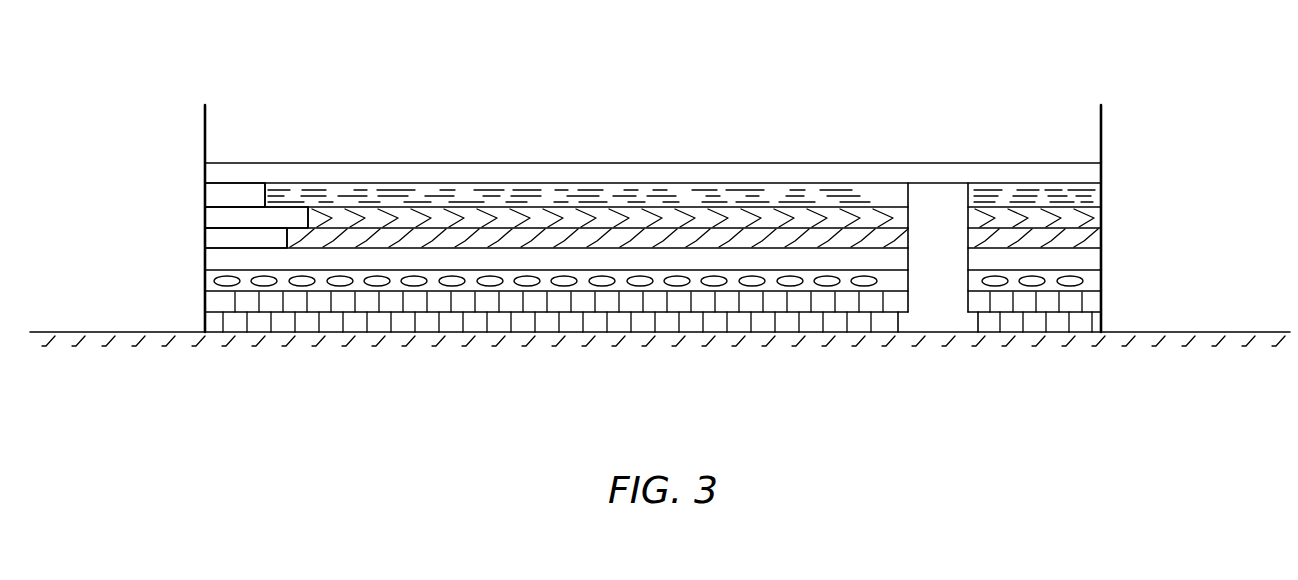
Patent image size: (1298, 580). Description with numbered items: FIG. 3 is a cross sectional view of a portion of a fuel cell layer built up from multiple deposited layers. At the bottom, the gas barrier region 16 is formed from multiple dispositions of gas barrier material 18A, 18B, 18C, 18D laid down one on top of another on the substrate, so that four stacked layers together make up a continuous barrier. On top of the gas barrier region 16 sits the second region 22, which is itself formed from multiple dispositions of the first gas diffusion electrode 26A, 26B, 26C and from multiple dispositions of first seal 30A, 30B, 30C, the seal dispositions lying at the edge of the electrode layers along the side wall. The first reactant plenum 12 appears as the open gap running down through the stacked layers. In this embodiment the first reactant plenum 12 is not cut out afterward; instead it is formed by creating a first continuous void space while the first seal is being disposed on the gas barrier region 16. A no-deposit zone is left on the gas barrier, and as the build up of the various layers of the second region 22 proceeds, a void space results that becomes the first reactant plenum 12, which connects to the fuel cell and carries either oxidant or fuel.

The first reactant plenum 12 is at (943, 287).
The gas barrier region 16 is at (188, 332).
The second region 22 is at (160, 260).
The gas barrier material 18A is at (1102, 318).
The gas barrier material 18B is at (1102, 295).
The gas barrier material 18C is at (1102, 272).
The gas barrier material 18D is at (1102, 250).
The first gas diffusion electrode 26A is at (1102, 226).
The first gas diffusion electrode 26B is at (1102, 202).
The first gas diffusion electrode 26C is at (1102, 188).
The first seal 30A is at (212, 233).
The first seal 30B is at (223, 220).
The end portion of layer 26C 30C is at (230, 192).